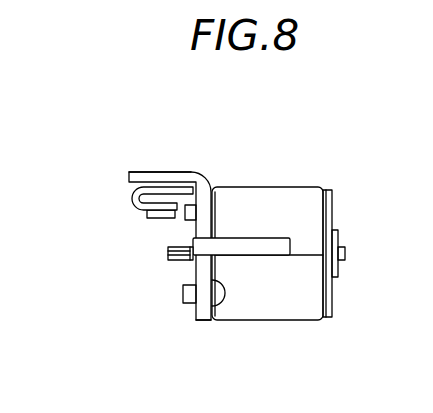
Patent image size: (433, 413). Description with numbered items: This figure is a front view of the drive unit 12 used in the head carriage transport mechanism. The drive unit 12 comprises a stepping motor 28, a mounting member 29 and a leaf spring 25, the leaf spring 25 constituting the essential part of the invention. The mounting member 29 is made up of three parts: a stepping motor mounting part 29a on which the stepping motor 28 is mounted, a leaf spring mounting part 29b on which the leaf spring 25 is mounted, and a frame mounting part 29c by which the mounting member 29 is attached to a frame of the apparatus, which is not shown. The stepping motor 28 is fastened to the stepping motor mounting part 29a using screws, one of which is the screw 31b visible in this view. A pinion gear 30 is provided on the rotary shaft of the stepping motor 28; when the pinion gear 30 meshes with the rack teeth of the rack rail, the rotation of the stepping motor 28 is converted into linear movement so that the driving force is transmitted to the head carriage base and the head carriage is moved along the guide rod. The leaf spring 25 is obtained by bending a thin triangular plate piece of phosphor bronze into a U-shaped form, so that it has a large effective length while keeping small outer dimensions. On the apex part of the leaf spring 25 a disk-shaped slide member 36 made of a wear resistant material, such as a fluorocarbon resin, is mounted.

The drive unit 12 is at (294, 106).
The stepping motor 28 is at (308, 190).
The mounting member 29 is at (174, 168).
The stepping motor mounting part 29a is at (196, 318).
The leaf spring mounting part 29b is at (142, 175).
The frame mounting part 29c is at (237, 245).
The leaf spring 25 is at (127, 202).
The slide member 36 is at (158, 215).
The pinion gear 30 is at (173, 262).
The screw 31b is at (223, 293).